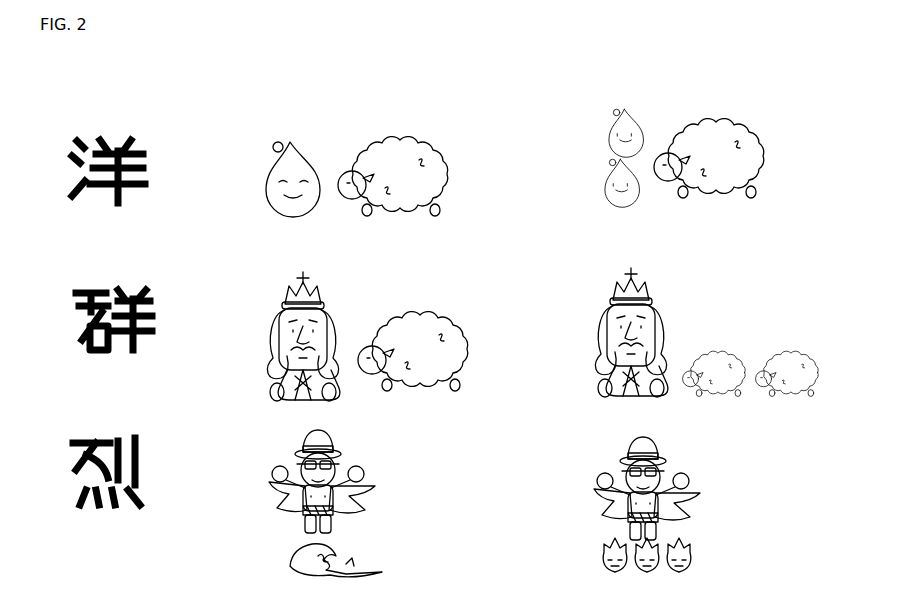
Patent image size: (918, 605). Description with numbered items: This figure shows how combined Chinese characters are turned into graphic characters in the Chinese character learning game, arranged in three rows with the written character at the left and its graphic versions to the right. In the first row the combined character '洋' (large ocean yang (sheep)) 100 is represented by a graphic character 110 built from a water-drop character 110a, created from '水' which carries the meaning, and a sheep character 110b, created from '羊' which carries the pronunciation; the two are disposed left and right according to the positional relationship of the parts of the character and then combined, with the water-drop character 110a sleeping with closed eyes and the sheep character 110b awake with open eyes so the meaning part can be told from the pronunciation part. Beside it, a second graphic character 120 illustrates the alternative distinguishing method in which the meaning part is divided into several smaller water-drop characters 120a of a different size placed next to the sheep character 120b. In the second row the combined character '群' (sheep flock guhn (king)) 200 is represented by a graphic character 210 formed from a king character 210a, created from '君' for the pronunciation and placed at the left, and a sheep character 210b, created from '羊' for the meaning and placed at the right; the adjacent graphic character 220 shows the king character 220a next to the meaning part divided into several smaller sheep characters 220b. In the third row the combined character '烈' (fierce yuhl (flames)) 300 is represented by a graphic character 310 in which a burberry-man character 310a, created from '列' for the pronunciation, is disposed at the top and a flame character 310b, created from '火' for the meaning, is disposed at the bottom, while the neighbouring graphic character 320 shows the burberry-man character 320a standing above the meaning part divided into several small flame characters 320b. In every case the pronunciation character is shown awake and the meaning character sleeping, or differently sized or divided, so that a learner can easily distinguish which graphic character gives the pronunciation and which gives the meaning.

The combined character '洋' (large ocean yang (sheep)) 100 is at (150, 137).
The graphic character of '洋' 110 is at (384, 144).
The water-drop character 110a is at (296, 139).
The sheep character 110b is at (428, 138).
The second image set for character 100 120 is at (722, 139).
The small water drop images 120a is at (640, 122).
The sheep image 120b is at (763, 122).
The combined character '群' (sheep flock guhn (king)) 200 is at (153, 308).
The graphic character of '群' 210 is at (393, 329).
The king character 210a is at (330, 305).
The sheep character 210b is at (445, 313).
The second image set for character 200 220 is at (726, 330).
The king image 220a is at (665, 305).
The small sheep images 220b is at (780, 340).
The combined character '烈' (fierce yuhl (flames)) 300 is at (145, 458).
The graphic character of '烈' 310 is at (379, 502).
The burberry-man character 310a is at (360, 458).
The flame character 310b is at (370, 533).
The second image set for character 300 320 is at (701, 498).
The hero image 320a is at (690, 458).
The small flame images 320b is at (700, 560).